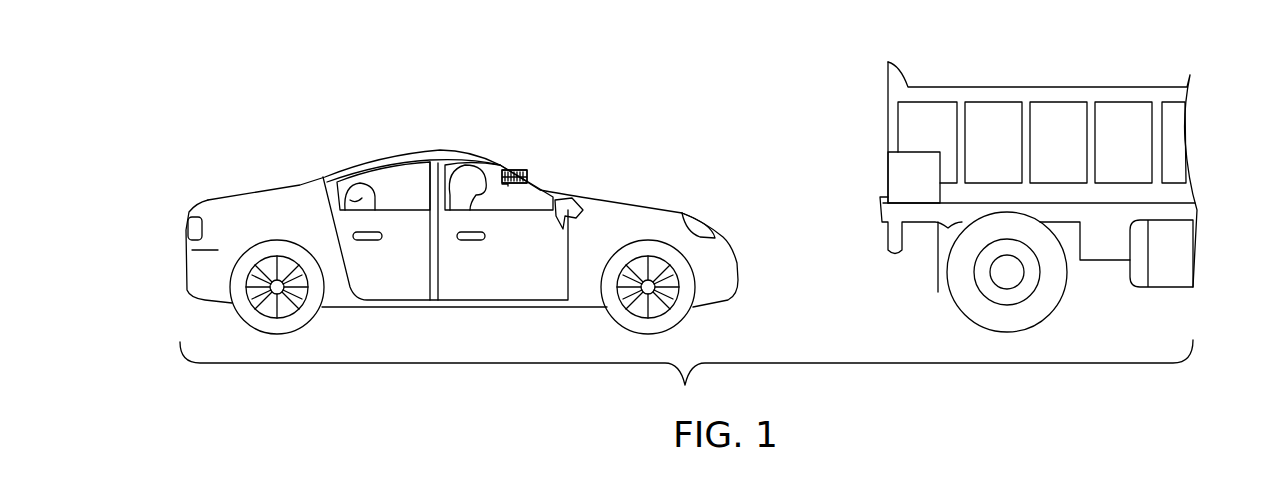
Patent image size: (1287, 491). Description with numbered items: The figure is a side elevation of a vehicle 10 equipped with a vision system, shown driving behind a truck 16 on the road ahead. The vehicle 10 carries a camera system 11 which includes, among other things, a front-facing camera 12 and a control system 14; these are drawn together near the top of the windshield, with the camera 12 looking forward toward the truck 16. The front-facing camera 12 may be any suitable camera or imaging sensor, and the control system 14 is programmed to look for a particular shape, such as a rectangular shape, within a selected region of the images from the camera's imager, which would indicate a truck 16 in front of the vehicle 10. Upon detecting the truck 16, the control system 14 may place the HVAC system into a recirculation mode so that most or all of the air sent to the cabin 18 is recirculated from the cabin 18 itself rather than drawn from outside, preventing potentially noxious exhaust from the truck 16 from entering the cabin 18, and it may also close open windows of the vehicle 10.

The vehicle 10 is at (462, 253).
The camera system 11 is at (511, 122).
The front-facing camera 12 is at (516, 171).
The control system 14 is at (505, 170).
The truck 16 is at (888, 123).
The cabin 18 is at (400, 173).